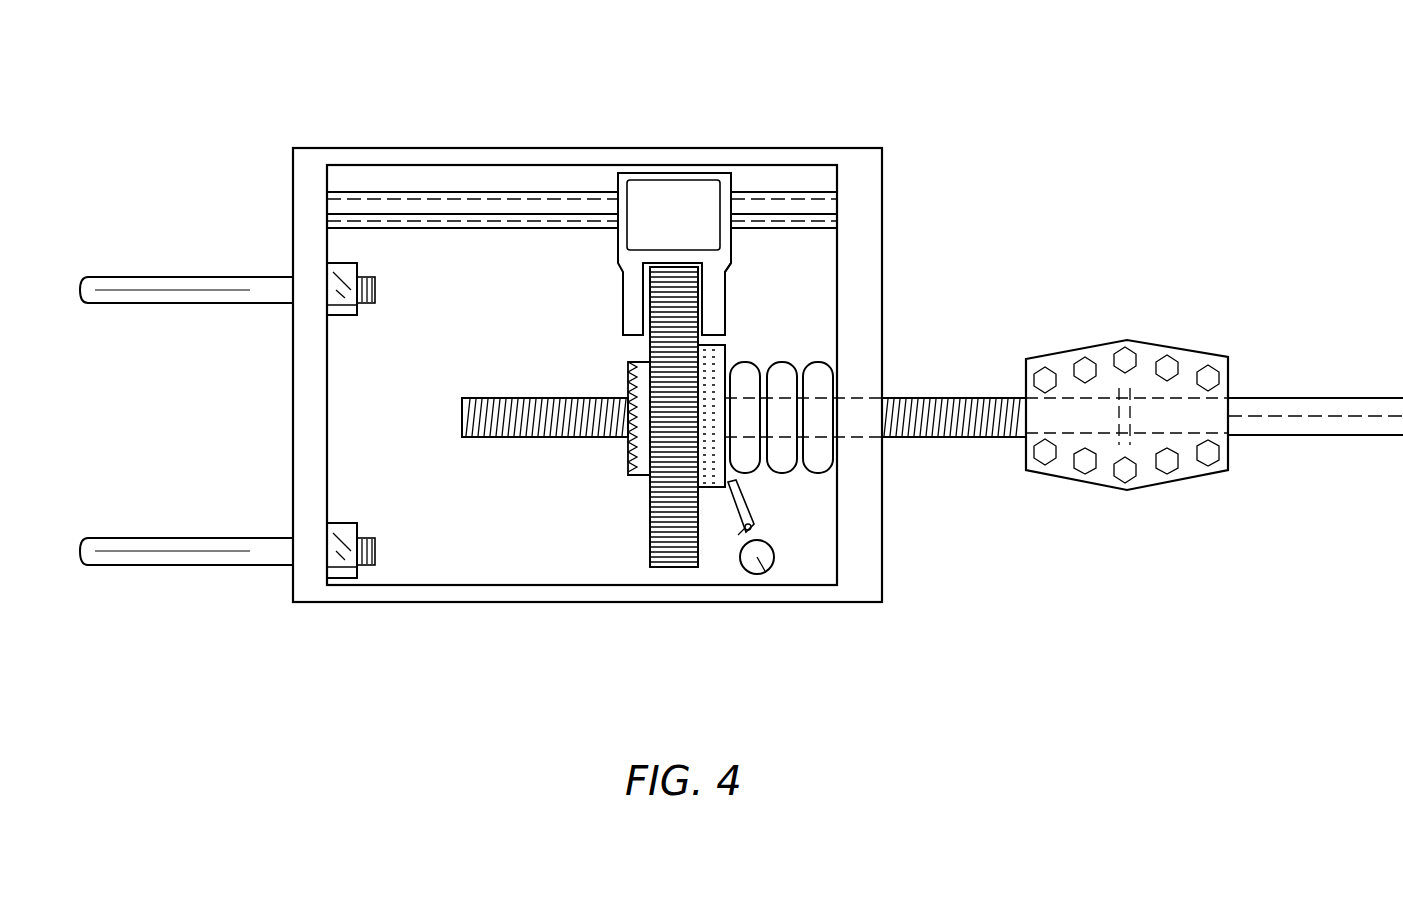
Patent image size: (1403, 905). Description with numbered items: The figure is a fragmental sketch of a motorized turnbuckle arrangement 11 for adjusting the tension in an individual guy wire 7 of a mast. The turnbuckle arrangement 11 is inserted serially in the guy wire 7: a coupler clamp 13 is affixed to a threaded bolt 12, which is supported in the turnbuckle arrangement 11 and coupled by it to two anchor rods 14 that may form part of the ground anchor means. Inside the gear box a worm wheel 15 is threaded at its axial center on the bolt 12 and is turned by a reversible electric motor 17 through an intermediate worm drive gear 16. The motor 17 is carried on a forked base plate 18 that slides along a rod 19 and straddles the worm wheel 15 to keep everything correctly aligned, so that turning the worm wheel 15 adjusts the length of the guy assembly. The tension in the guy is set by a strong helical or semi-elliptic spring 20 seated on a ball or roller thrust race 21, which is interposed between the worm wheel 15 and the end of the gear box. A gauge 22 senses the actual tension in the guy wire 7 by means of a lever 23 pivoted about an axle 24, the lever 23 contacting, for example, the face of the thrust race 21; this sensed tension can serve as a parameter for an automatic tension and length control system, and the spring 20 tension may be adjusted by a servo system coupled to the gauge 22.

The guy wire 7 is at (1318, 398).
The motorized turnbuckle arrangement 11 is at (684, 116).
The threaded bolt 12 is at (918, 398).
The coupler clamp 13 is at (1073, 348).
The anchor rod 14 is at (188, 305).
The worm wheel 15 is at (650, 530).
The worm drive gear 16 is at (628, 462).
The reversible electric motor 17 is at (635, 256).
The forked base plate 18 is at (727, 263).
The rod 19 is at (521, 228).
The helical spring 20 is at (783, 362).
The thrust race 21 is at (727, 352).
The gauge 22 is at (774, 557).
The lever 23 is at (755, 522).
The axle 24 is at (743, 530).